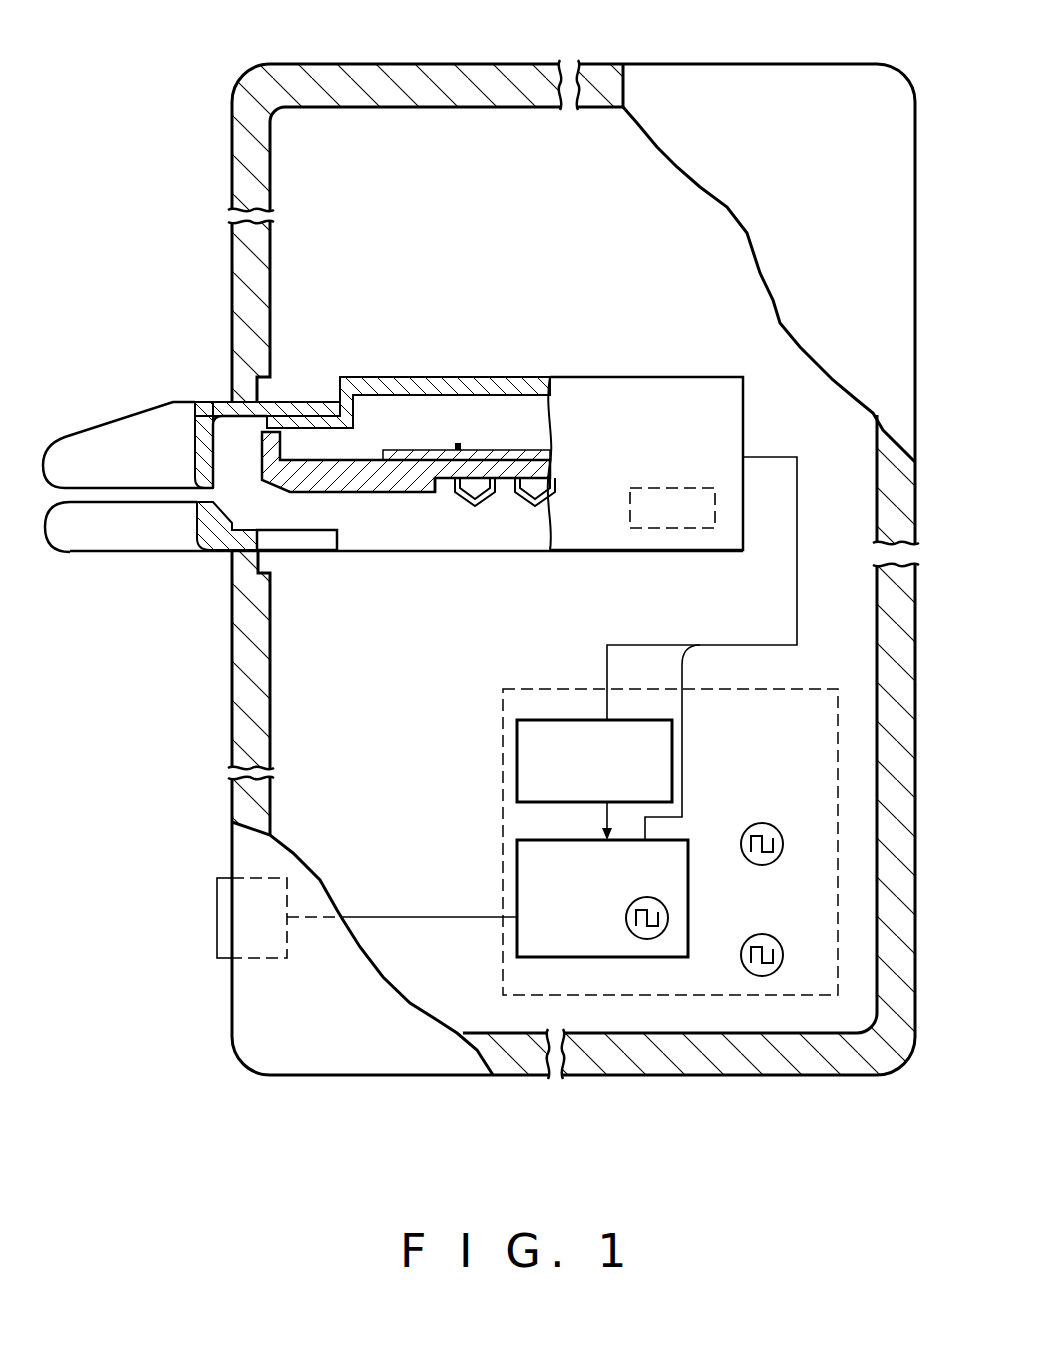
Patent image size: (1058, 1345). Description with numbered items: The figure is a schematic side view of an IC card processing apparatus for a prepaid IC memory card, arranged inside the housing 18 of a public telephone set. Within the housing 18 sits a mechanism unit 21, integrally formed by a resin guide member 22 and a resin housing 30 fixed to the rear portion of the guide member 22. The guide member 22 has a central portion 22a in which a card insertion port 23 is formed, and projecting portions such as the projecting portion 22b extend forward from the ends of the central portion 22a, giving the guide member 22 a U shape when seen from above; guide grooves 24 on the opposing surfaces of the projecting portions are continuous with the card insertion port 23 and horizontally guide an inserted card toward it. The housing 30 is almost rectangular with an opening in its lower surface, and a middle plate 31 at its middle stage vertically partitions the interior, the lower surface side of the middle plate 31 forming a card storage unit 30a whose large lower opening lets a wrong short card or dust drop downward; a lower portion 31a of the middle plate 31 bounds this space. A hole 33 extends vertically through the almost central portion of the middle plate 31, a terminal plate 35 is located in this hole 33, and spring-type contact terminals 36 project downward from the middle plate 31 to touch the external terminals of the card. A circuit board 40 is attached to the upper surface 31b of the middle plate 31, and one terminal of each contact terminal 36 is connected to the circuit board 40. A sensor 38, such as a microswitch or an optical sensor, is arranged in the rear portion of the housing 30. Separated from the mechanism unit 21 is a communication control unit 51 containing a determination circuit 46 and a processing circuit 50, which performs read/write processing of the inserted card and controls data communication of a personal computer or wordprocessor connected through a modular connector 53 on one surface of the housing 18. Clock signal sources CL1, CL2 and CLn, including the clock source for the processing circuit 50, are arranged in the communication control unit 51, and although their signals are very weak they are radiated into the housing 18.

The housing 18 is at (258, 64).
The mechanism unit 21 is at (469, 459).
The guide member 22 is at (190, 402).
The central portion 22a is at (190, 447).
The projecting portion 22b is at (103, 423).
The card insertion port 23 is at (197, 497).
The guide groove 24 is at (108, 497).
The housing 30 is at (665, 377).
The card storage unit 30a is at (396, 506).
The middle plate 31 is at (353, 470).
The holder lower portion 31a is at (357, 494).
The upper surface 31b is at (304, 400).
The hole 33 is at (443, 490).
The terminal plate 35 is at (500, 480).
The contact terminals 36 is at (465, 498).
The sensor 38 is at (696, 515).
The circuit board 40 is at (495, 450).
The determination circuit 46 is at (627, 720).
The processing circuit 50 is at (688, 840).
The communication control unit 51 is at (503, 770).
The modular connector 53 is at (217, 917).
The clock signal source CL1 is at (775, 823).
The clock signal source CL2 is at (786, 928).
The clock signal source CLn is at (668, 918).